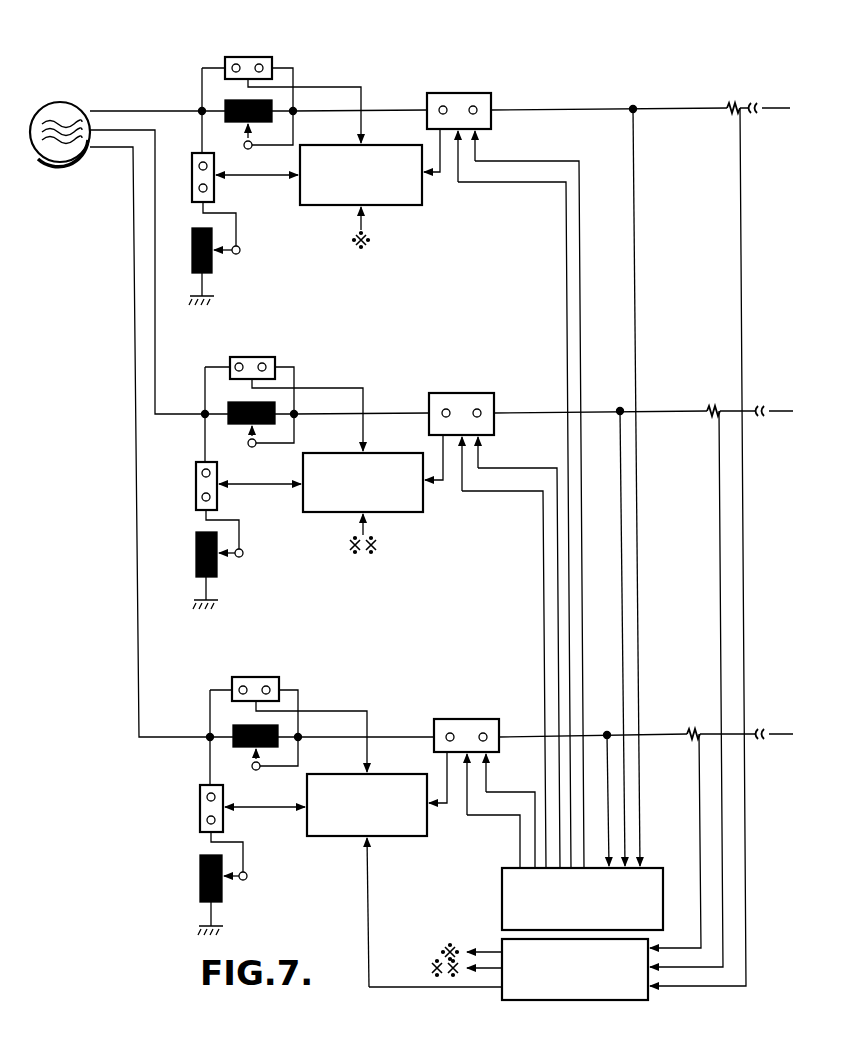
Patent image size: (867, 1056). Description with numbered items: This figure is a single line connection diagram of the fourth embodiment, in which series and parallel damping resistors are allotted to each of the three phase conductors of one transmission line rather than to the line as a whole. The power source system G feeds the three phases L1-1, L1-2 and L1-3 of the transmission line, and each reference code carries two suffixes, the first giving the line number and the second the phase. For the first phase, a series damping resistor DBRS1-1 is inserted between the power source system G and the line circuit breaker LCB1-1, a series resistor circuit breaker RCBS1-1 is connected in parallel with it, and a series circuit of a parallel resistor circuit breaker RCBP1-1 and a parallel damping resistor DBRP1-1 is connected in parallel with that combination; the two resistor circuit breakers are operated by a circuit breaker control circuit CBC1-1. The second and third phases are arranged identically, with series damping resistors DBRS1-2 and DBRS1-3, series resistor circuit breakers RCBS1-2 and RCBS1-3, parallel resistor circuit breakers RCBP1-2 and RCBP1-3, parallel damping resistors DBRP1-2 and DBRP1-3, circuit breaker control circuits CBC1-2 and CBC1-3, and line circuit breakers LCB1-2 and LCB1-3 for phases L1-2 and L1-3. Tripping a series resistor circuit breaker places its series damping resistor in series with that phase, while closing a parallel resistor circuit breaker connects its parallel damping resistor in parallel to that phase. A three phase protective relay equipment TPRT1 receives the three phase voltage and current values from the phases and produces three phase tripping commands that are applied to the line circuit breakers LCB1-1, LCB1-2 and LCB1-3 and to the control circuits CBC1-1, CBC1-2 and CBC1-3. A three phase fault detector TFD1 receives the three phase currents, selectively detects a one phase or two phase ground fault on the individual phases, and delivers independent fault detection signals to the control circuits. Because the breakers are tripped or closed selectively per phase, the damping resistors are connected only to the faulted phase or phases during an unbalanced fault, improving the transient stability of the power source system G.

The power source system G is at (60, 102).
The series damping resistor DBRS1-1 is at (226, 100).
The series resistor circuit breaker RCBS1-1 is at (253, 57).
The parallel resistor circuit breaker RCBP1-1 is at (192, 183).
The parallel damping resistor DBRP1-1 is at (210, 268).
The circuit breaker control circuit CBC1-1 is at (382, 145).
The line circuit breaker LCB1-1 is at (462, 93).
The first phase of transmission line L1-1 is at (580, 110).
The series damping resistor DBRS1-2 is at (236, 425).
The series resistor circuit breaker RCBS1-2 is at (252, 357).
The parallel resistor circuit breaker RCBP1-2 is at (196, 486).
The parallel damping resistor DBRP1-2 is at (215, 566).
The circuit breaker control circuit CBC1-2 is at (383, 453).
The line circuit breaker LCB1-2 is at (465, 393).
The second phase of transmission line L1-2 is at (657, 411).
The series damping resistor DBRS1-3 is at (235, 728).
The series resistor circuit breaker RCBS1-3 is at (256, 677).
The parallel resistor circuit breaker RCBP1-3 is at (200, 800).
The parallel damping resistor DBRP1-3 is at (222, 890).
The circuit breaker control circuit CBC1-3 is at (388, 774).
The line circuit breaker LCB1-3 is at (470, 719).
The third phase of transmission line L1-3 is at (660, 734).
The three phase protective relay equipment TPRT1 is at (502, 900).
The three phase fault detector TFD1 is at (521, 1000).